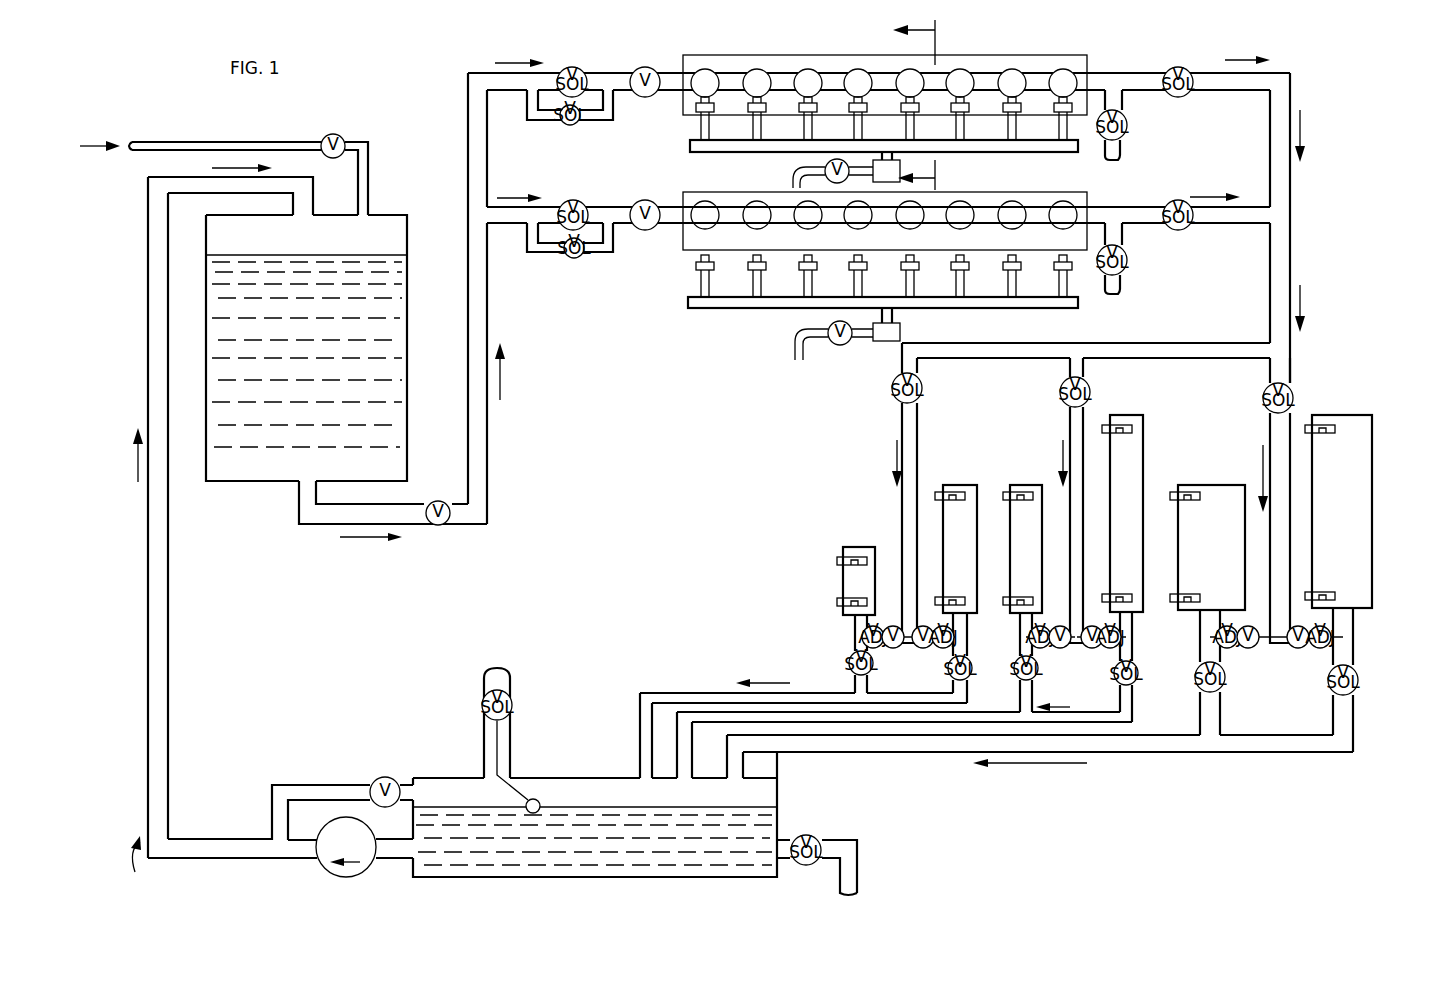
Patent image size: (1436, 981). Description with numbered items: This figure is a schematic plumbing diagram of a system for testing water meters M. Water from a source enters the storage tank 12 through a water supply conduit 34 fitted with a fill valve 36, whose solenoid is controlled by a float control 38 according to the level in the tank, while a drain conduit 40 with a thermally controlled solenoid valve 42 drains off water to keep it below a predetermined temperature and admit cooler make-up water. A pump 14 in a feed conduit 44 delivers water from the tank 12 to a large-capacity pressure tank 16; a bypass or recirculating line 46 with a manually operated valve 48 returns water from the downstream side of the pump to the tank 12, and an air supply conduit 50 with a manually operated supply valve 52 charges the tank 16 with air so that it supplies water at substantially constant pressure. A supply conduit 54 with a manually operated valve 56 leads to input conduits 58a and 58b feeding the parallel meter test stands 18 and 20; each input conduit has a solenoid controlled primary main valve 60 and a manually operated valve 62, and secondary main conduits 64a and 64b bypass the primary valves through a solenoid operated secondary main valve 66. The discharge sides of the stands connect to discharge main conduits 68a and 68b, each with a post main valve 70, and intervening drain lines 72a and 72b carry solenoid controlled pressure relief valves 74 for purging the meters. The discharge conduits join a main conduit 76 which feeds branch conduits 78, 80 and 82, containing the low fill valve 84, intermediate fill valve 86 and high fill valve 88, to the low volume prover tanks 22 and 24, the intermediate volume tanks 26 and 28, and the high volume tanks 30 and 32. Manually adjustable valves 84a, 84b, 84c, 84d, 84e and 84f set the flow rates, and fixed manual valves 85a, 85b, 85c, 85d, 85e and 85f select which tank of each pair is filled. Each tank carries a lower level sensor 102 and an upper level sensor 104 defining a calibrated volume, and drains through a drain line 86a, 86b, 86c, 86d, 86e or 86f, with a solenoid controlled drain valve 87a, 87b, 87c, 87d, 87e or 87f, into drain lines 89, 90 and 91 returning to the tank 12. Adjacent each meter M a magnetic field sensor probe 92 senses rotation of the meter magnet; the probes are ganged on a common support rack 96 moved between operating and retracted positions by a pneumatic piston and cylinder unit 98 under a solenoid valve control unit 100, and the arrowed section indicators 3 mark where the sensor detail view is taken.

The section line for FIG. 3 is at (925, 108).
The storage tank 12 is at (597, 772).
The pump 14 is at (344, 818).
The pressure tank 16 is at (407, 382).
The meter test stand 18 is at (858, 50).
The meter test stand 20 is at (1002, 190).
The low volume prover tank 22 is at (858, 547).
The low volume prover tank 24 is at (952, 485).
The intermediate volume prover tank 26 is at (1020, 485).
The intermediate volume prover tank 28 is at (1128, 415).
The high volume prover tank 30 is at (1212, 485).
The high volume prover tank 32 is at (1352, 415).
The water supply conduit 34 is at (505, 677).
The fill valve 36 is at (513, 705).
The float control 38 is at (538, 790).
The drain conduit 40 is at (857, 855).
The thermally controlled solenoid valve 42 is at (815, 836).
The feed conduit 44 is at (168, 612).
The bypass line 46 is at (290, 762).
The manually operated valve 48 is at (390, 776).
The air supply conduit 50 is at (258, 142).
The manually operated supply valve 52 is at (343, 136).
The supply conduit 54 is at (487, 462).
The manually operated valve 56 is at (436, 498).
The input conduit 58a is at (470, 73).
The input conduit 58b is at (540, 207).
The primary main valve 60 is at (583, 68).
The manually operated valve 62 is at (640, 67).
The secondary main conduit 64a is at (532, 125).
The secondary main conduit 64b is at (532, 258).
The secondary main valve 66 is at (572, 126).
The discharge main conduit 68a is at (1283, 73).
The discharge main conduit 68b is at (1243, 207).
The post main valve 70 is at (1183, 97).
The drain line 72a is at (1120, 150).
The drain line 72b is at (1120, 285).
The pressure relief valve 74 is at (1128, 124).
The main conduit 76 is at (1290, 262).
The branch conduit 78 is at (930, 432).
The branch conduit 80 is at (1090, 400).
The branch conduit 82 is at (1268, 428).
The low fill valve 84 is at (895, 400).
The intermediate fill valve 86 is at (1060, 395).
The high fill valve 88 is at (1265, 390).
The manually adjustable valve 84a is at (862, 636).
The manually adjustable valve 84b is at (940, 650).
The manually adjustable valve 84c is at (1060, 648).
The manually adjustable valve 84d is at (1118, 645).
The manually adjustable valve 84e is at (1228, 648).
The manually adjustable valve 84f is at (1326, 648).
The fixed manual valve 85a is at (892, 648).
The fixed manual valve 85b is at (920, 626).
The fixed manual valve 85c is at (1042, 652).
The fixed manual valve 85d is at (1092, 648).
The fixed manual valve 85e is at (1250, 648).
The fixed manual valve 85f is at (1298, 648).
The drain line 86a is at (855, 648).
The drain line 86b is at (962, 650).
The drain line 86c is at (1018, 655).
The drain line 86d is at (1148, 646).
The drain line 86e is at (1200, 665).
The drain line 86f is at (1360, 662).
The drain valve 87a is at (852, 672).
The drain valve 87b is at (948, 672).
The drain valve 87c is at (1016, 680).
The drain valve 87d is at (1116, 684).
The drain valve 87e is at (1205, 692).
The drain valve 87f is at (1330, 692).
The drain line 89 is at (660, 693).
The drain line 90 is at (677, 750).
The drain line 91 is at (883, 752).
The magnetic field sensor probe 92 is at (712, 105).
The support rack 96 is at (722, 156).
The piston and cylinder unit 98 is at (895, 163).
The solenoid valve control unit 100 is at (808, 165).
The lower level sensor 102 is at (838, 605).
The upper level sensor 104 is at (840, 562).
The meter M is at (858, 72).